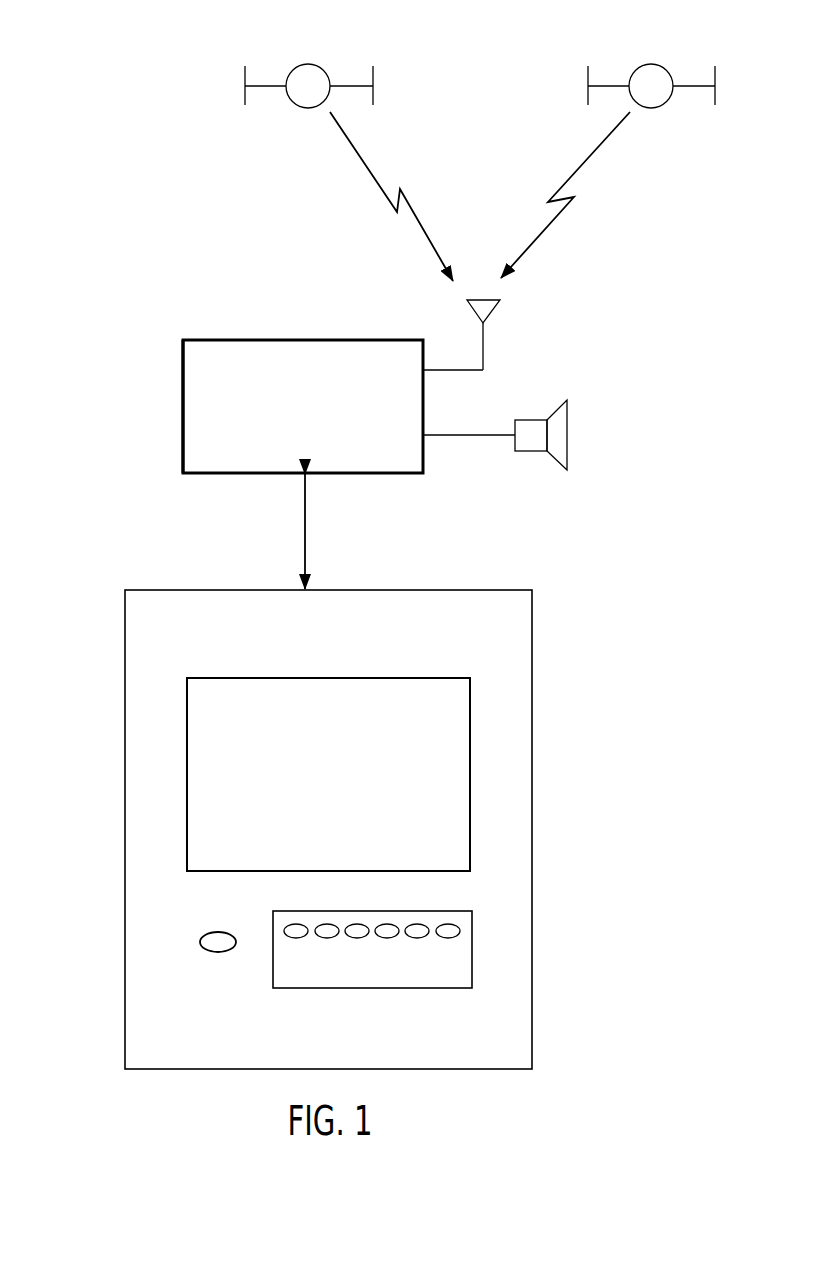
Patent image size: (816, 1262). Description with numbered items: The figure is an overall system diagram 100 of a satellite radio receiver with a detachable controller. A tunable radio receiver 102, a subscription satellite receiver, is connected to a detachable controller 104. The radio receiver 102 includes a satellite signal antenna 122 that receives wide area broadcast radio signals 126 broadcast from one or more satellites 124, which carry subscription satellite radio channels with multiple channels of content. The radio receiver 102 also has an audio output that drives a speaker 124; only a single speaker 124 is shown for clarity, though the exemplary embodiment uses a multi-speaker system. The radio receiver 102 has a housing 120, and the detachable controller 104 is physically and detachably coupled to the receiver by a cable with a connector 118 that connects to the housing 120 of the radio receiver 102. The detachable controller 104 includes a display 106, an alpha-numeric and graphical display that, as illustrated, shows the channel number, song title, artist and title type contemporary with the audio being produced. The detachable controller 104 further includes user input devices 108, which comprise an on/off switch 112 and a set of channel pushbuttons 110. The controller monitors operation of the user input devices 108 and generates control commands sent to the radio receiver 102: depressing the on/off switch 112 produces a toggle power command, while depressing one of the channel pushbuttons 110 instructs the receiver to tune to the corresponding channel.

The overall system diagram 100 is at (198, 201).
The radio receiver 102 is at (280, 338).
The detachable controller 104 is at (185, 590).
The display 106 is at (471, 776).
The user input devices 108 is at (374, 998).
The set of channel pushbuttons 110 is at (472, 948).
The on/off switch 112 is at (200, 941).
The connector 118 is at (305, 533).
The housing 120 is at (183, 405).
The satellite signal antenna 122 is at (493, 310).
The satellite / speaker 124 is at (310, 64).
The wide area broadcast radio signals 126 is at (365, 162).